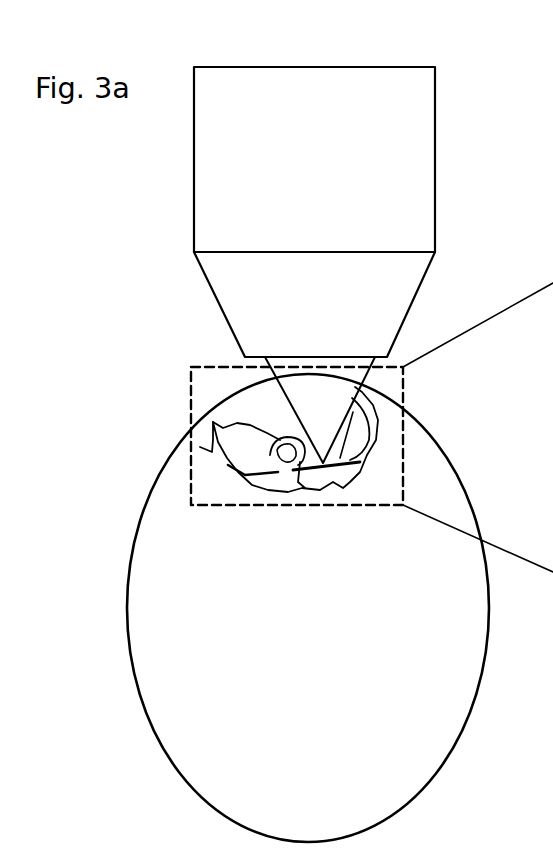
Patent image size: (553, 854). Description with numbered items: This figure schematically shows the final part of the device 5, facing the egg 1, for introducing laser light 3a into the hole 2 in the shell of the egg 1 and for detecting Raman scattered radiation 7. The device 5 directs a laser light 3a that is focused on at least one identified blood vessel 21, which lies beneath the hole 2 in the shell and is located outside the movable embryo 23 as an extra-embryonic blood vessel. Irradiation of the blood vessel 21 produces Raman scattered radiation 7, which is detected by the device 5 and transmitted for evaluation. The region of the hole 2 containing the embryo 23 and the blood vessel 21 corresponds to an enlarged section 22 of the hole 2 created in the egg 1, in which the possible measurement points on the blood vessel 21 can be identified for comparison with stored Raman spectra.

The egg 1 is at (152, 612).
The hole 2 is at (225, 452).
The laser light 3a is at (300, 385).
The device 5 is at (322, 149).
The Raman scattered radiation 7 is at (247, 390).
The blood vessel 21 is at (350, 478).
The enlarged section 22 is at (303, 506).
The embryo 23 is at (222, 427).